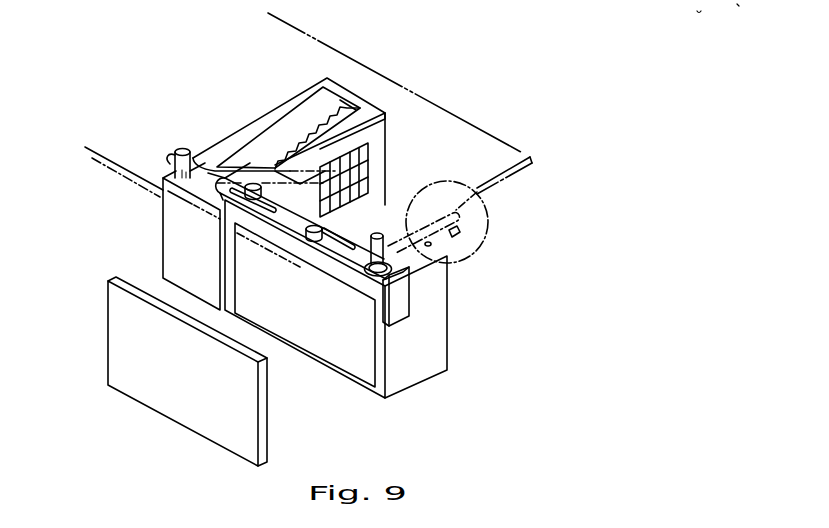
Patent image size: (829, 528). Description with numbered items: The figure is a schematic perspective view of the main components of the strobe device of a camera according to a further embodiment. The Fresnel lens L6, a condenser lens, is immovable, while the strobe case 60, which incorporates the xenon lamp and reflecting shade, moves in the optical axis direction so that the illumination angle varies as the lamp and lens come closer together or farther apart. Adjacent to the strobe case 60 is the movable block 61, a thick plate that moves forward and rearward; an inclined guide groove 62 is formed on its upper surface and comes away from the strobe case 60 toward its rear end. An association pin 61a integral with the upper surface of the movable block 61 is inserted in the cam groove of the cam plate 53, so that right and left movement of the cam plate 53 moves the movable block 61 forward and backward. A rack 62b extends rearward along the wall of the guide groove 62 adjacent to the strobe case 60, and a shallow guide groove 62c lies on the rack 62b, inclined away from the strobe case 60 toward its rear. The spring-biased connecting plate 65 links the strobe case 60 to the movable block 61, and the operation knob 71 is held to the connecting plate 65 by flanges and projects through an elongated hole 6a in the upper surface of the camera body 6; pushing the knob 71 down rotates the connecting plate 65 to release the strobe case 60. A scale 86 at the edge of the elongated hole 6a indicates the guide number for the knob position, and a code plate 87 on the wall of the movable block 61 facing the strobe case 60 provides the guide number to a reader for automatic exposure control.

The cam plate 53 is at (388, 76).
The inclined guide groove 62 is at (272, 155).
The rack 62b is at (305, 135).
The shallow guide groove 62c is at (355, 107).
The code plate 87 is at (368, 154).
The movable block 61 is at (175, 240).
The association pin 61a is at (184, 150).
The strobe case 60 is at (440, 330).
The connecting plate 65 is at (298, 228).
The operation knob 71 is at (391, 232).
The camera body 6 is at (480, 209).
The elongated hole 6a is at (447, 206).
The scale 86 is at (460, 240).
The Fresnel lens L6 is at (115, 340).